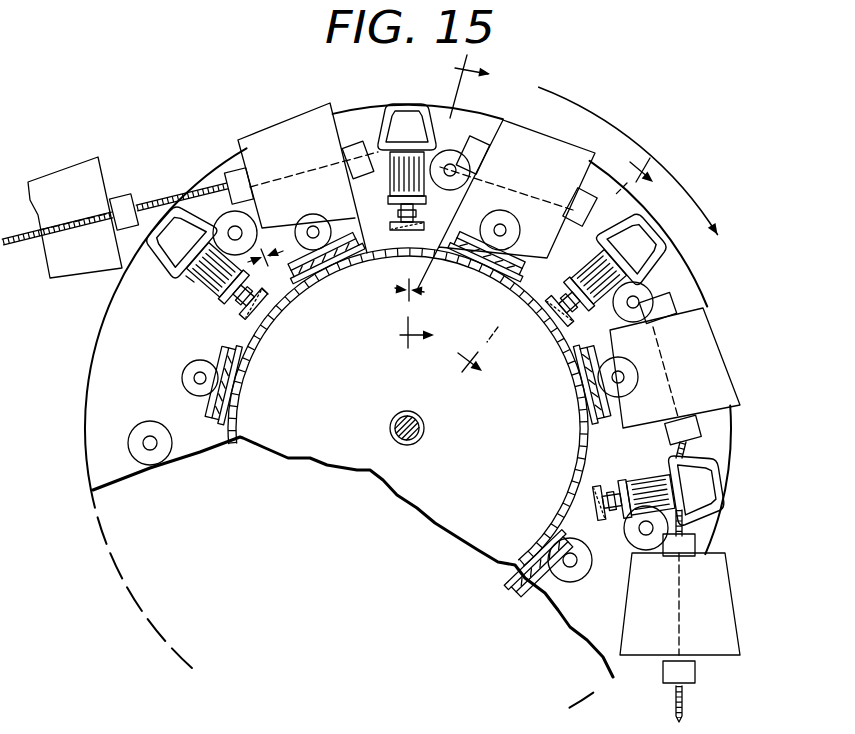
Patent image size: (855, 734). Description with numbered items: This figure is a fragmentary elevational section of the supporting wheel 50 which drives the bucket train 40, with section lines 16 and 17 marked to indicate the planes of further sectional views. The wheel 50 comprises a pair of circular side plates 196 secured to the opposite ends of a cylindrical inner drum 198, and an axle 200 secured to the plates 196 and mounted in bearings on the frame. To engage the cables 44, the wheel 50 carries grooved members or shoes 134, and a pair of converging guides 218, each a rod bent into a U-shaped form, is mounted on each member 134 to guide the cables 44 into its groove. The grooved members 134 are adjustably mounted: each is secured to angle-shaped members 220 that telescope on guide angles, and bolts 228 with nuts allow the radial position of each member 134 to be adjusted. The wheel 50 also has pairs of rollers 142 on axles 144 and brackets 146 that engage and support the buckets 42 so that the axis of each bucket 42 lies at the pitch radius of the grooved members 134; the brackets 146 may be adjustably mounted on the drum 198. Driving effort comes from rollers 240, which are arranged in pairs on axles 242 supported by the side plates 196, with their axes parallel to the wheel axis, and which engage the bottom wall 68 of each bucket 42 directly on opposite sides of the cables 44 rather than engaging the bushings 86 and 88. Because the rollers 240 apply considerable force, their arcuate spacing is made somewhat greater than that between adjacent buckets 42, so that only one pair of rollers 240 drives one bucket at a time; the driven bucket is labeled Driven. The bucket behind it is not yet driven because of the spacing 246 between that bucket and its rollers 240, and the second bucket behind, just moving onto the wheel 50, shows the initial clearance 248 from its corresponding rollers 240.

The section line 16- 16 is at (431, 202).
The section line 17- 17 is at (567, 275).
The bucket train 40 is at (63, 158).
The bucket 42 is at (258, 136).
The cable 44 is at (688, 707).
The wheel 50 is at (188, 162).
The bottom wall 68 is at (682, 304).
The bushing 86 is at (228, 168).
The bushing 88 is at (352, 142).
The grooved member 134 is at (200, 246).
The roller 142 is at (205, 360).
The axle 144 is at (195, 382).
The bracket 146 is at (214, 346).
The side plate 196 is at (85, 394).
The drum 198 is at (248, 394).
The axle 200 is at (422, 437).
The converging guide 218 is at (167, 256).
The angle-shaped member 220 is at (190, 280).
The bolt 228 is at (265, 292).
The roller 240 is at (452, 168).
The axle 242 is at (148, 447).
The spacing 246 is at (417, 293).
The clearance 248 is at (278, 278).